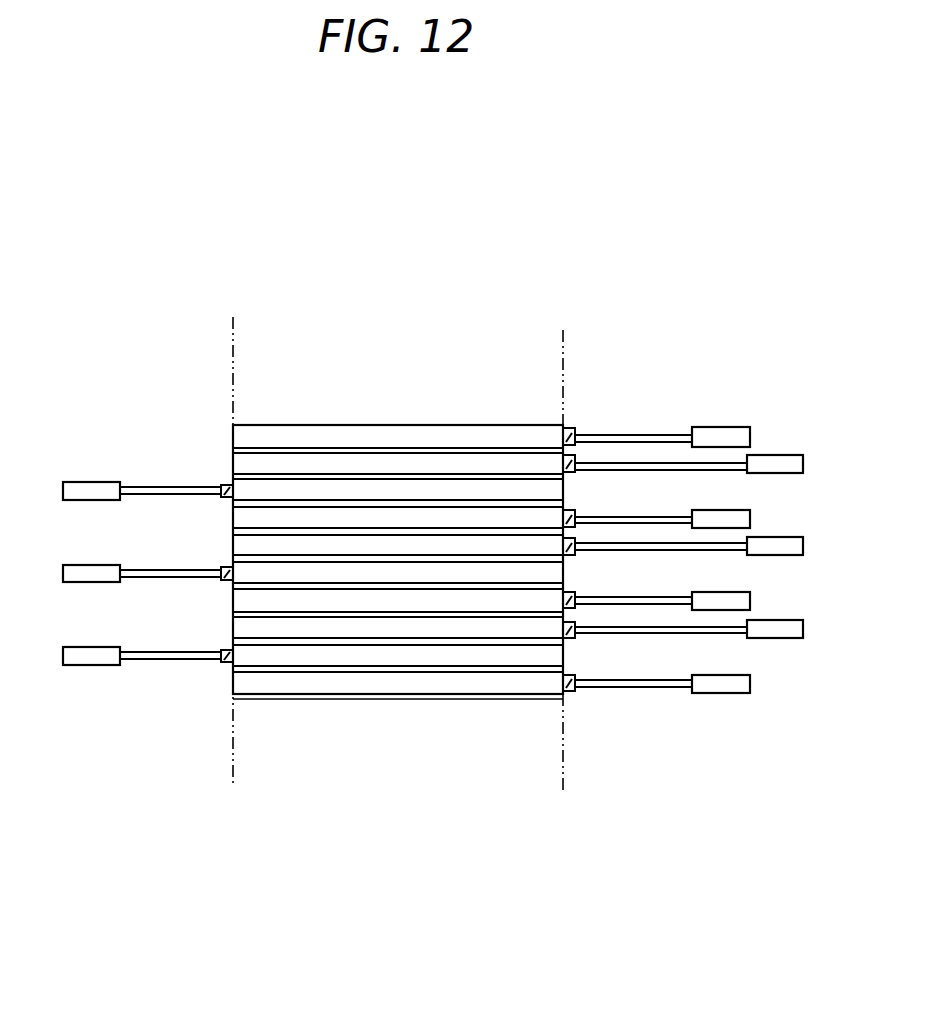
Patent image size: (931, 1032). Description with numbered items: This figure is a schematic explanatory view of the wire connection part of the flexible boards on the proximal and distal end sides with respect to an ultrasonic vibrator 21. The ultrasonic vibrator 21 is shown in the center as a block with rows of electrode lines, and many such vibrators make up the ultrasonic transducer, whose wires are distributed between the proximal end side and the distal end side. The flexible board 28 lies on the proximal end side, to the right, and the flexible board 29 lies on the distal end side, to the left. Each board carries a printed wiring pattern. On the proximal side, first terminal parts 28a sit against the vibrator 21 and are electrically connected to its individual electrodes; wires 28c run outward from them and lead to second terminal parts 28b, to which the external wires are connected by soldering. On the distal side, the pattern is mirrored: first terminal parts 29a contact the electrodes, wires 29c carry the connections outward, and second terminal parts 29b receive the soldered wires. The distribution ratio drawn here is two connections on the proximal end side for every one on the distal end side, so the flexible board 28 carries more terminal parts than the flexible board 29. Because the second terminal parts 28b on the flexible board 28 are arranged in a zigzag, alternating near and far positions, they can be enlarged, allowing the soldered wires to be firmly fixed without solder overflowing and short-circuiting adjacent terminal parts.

The ultrasonic vibrator 21 is at (400, 488).
The flexible board 28 is at (602, 544).
The first terminal part 28a is at (578, 546).
The second terminal part 28b is at (760, 547).
The wire 28c is at (673, 545).
The flexible board 29 is at (203, 608).
The first terminal part 29a is at (226, 500).
The second terminal part 29b is at (75, 490).
The wire 29c is at (195, 656).